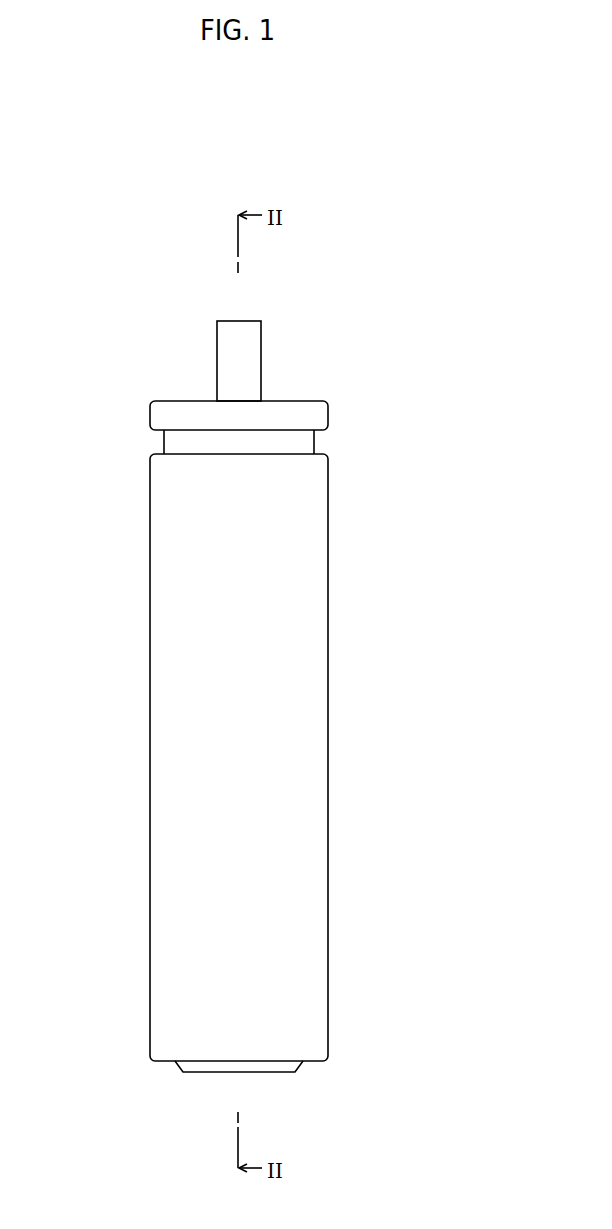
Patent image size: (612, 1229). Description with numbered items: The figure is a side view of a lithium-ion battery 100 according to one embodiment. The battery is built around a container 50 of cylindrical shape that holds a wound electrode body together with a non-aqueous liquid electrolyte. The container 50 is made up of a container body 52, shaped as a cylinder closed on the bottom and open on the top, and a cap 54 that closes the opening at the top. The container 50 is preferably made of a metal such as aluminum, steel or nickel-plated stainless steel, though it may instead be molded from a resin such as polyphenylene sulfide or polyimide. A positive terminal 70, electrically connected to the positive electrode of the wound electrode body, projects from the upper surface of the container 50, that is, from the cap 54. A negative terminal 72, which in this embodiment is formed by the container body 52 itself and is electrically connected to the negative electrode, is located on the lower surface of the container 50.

The lithium-ion battery 100 is at (363, 374).
The container 50 is at (148, 866).
The container body 52 is at (317, 852).
The cap 54 is at (168, 413).
The positive terminal 70 is at (252, 320).
The negative terminal 72 is at (201, 1065).